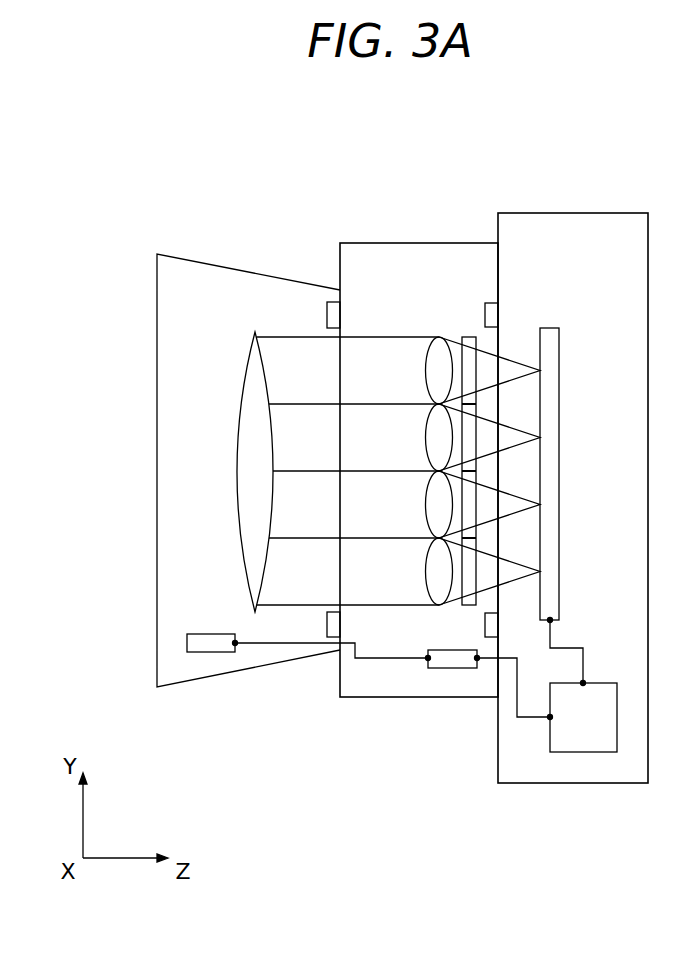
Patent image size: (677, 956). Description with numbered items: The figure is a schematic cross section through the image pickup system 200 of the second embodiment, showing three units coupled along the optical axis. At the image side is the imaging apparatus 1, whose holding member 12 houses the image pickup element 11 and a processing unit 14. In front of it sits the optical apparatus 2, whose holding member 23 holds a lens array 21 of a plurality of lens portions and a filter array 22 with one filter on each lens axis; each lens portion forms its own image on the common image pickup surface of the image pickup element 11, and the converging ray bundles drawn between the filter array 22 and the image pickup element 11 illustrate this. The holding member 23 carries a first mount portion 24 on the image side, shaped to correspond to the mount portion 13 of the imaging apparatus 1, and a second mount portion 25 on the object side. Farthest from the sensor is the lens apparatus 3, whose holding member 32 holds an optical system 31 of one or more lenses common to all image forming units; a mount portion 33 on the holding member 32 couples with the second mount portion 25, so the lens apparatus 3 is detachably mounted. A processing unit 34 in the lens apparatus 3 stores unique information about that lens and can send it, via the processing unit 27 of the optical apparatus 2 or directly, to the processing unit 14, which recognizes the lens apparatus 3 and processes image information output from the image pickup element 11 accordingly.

The imaging apparatus 1 is at (487, 130).
The optical apparatus 2 is at (500, 159).
The lens apparatus 3 is at (155, 190).
The image pickup element 11 is at (543, 328).
The holding member 12 is at (618, 213).
The mount portion 13 is at (485, 625).
The processing unit 14 is at (570, 752).
The lens array 21 is at (440, 337).
The filter array 22 is at (465, 337).
The holding member 23 is at (382, 243).
The first mount portion 24 is at (430, 630).
The second mount portion 25 is at (326, 622).
The processing unit 27 is at (452, 668).
The optical system 31 is at (255, 332).
The holding member 32 is at (195, 262).
The mount portion 33 is at (281, 665).
The processing unit 34 is at (215, 634).
The image pickup system 200 is at (391, 857).